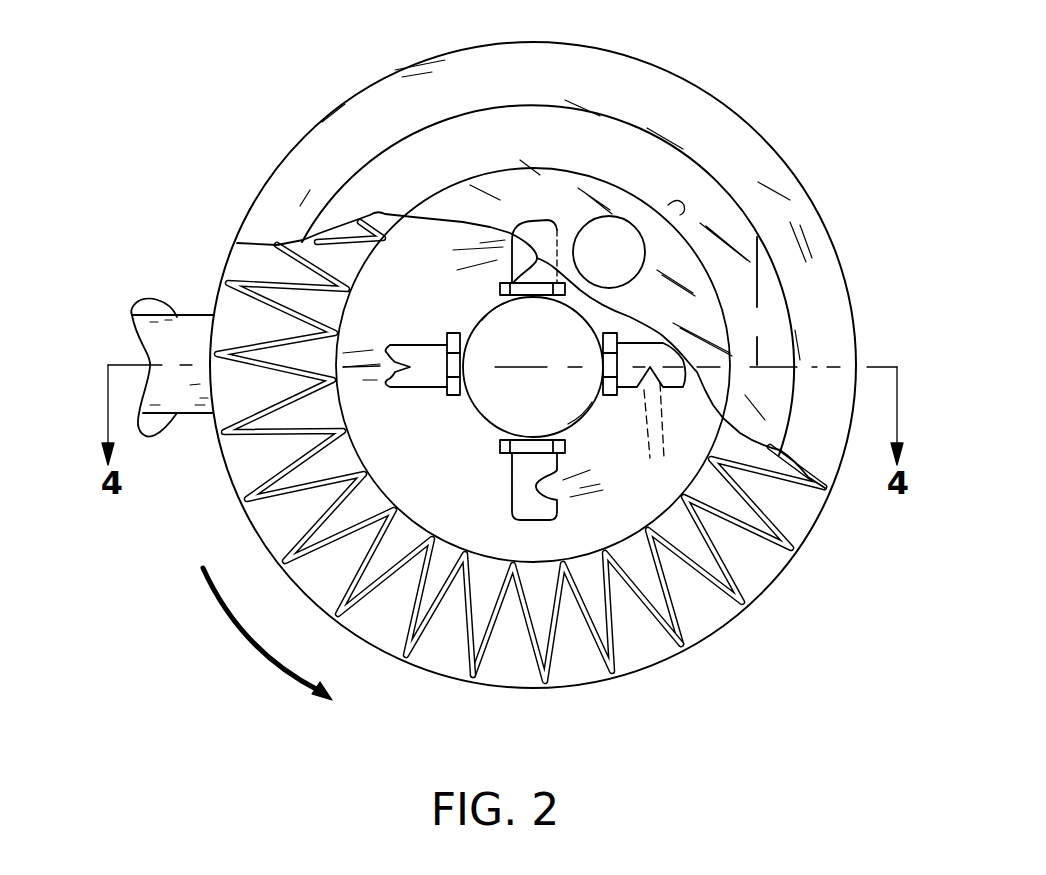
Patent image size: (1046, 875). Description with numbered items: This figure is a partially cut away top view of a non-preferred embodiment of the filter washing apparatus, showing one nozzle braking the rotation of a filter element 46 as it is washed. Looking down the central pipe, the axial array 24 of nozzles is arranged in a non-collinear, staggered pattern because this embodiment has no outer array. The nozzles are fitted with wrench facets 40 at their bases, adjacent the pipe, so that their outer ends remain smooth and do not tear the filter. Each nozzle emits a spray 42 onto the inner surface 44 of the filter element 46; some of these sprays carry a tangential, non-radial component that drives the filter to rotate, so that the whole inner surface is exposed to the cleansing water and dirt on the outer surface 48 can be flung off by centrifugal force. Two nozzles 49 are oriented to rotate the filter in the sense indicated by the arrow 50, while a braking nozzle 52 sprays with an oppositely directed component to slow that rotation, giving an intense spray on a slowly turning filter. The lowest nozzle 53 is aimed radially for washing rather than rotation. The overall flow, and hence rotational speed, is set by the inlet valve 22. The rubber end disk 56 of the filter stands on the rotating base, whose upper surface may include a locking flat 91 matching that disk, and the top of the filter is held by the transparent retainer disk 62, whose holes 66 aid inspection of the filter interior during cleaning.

The inlet valve 22 is at (153, 428).
The axial array 24 is at (461, 475).
The wrench facets 40 is at (611, 340).
The sprays 42 is at (362, 347).
The inner surface 44 is at (423, 634).
The filter element 46 is at (596, 662).
The outer surface 48 is at (530, 667).
The nozzles 49 is at (505, 279).
The arrow 50 is at (285, 672).
The braking nozzle 52 is at (723, 414).
The lowest nozzle 53 is at (437, 393).
The rubber end disk 56 is at (291, 166).
The retainer disk 62 is at (650, 146).
The holes 66 is at (620, 255).
The locking flat 91 is at (764, 277).